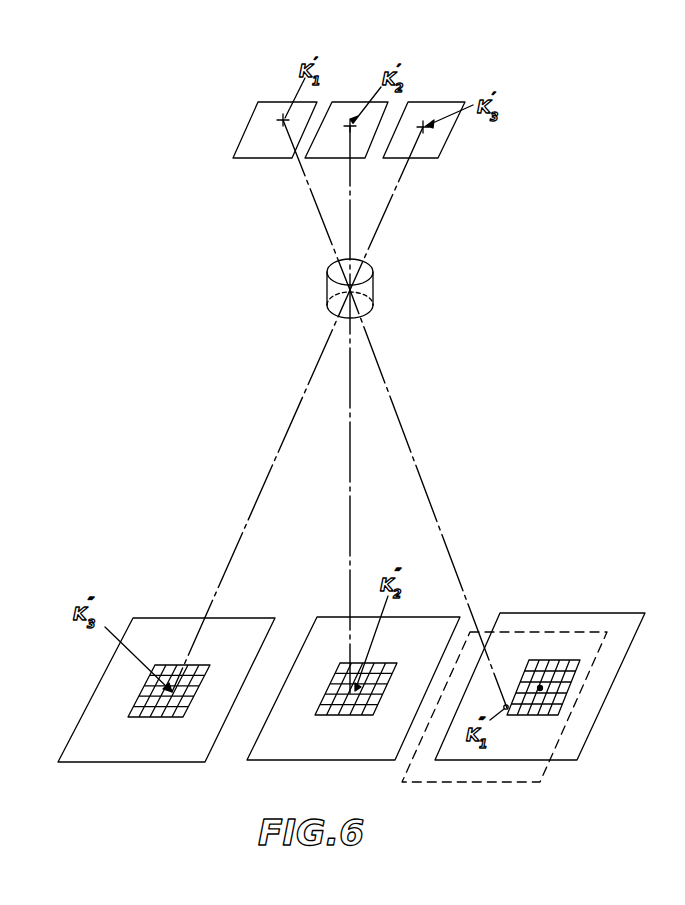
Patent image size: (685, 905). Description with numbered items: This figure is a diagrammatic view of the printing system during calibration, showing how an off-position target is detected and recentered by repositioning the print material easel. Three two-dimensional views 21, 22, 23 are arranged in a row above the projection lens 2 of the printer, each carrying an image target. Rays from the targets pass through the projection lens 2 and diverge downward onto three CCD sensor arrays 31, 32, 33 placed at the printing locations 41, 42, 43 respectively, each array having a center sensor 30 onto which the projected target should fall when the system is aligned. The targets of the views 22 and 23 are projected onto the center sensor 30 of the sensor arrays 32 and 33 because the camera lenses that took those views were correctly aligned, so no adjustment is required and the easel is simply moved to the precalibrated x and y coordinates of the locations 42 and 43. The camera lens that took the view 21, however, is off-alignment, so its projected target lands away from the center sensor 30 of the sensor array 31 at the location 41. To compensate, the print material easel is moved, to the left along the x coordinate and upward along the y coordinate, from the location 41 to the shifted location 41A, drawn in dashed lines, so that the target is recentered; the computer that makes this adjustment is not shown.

The projection lens 2 is at (380, 283).
The 2-D view 21 is at (265, 102).
The 2-D view 22 is at (342, 102).
The 2-D view 23 is at (430, 102).
The center sensor 30 is at (540, 688).
The CCD sensor array 31 is at (580, 660).
The CCD sensor array 32 is at (397, 663).
The CCD sensor array 33 is at (210, 665).
The location 41 is at (592, 723).
The location 41A is at (550, 781).
The location 42 is at (381, 760).
The location 43 is at (93, 762).